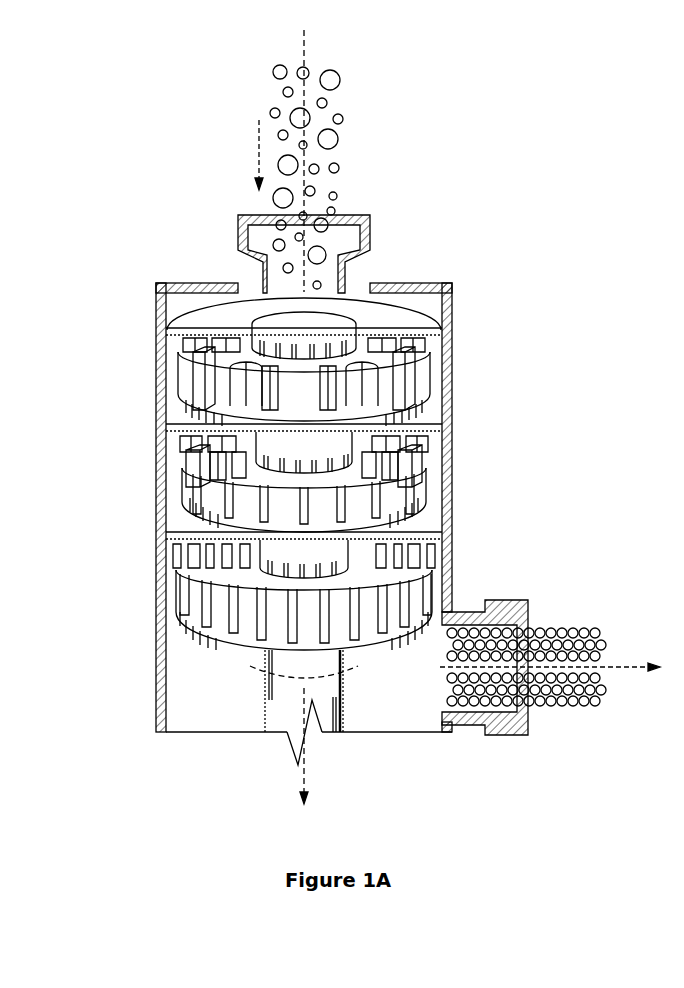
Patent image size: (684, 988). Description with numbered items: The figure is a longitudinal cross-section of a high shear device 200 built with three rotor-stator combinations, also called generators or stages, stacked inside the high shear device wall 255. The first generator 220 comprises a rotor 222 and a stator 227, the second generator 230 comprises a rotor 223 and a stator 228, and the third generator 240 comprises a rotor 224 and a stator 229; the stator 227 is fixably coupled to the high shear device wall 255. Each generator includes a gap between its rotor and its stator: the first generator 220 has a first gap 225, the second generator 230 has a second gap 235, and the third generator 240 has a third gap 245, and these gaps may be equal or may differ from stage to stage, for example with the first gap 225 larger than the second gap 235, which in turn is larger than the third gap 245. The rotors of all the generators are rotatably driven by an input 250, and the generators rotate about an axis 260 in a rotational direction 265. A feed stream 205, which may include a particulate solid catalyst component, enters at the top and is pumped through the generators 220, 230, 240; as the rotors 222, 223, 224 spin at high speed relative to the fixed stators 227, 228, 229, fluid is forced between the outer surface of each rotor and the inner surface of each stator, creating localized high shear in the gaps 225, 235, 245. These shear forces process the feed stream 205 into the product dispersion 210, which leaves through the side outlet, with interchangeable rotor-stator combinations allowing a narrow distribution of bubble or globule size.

The high shear device 200 is at (104, 178).
The feed stream 205 is at (336, 206).
The product dispersion 210 is at (611, 676).
The first generator 220 is at (259, 364).
The rotor 222 is at (430, 364).
The rotor 223 is at (430, 464).
The rotor 224 is at (438, 574).
The first gap 225 is at (394, 369).
The stator 227 is at (422, 316).
The stator 228 is at (422, 416).
The stator 229 is at (422, 516).
The second generator 230 is at (261, 472).
The second gap 235 is at (394, 468).
The third generator 240 is at (264, 576).
The third gap 245 is at (400, 585).
The input 250 is at (272, 715).
The high shear device wall 255 is at (153, 284).
The axis 260 is at (294, 777).
The rotational direction 265 is at (374, 668).